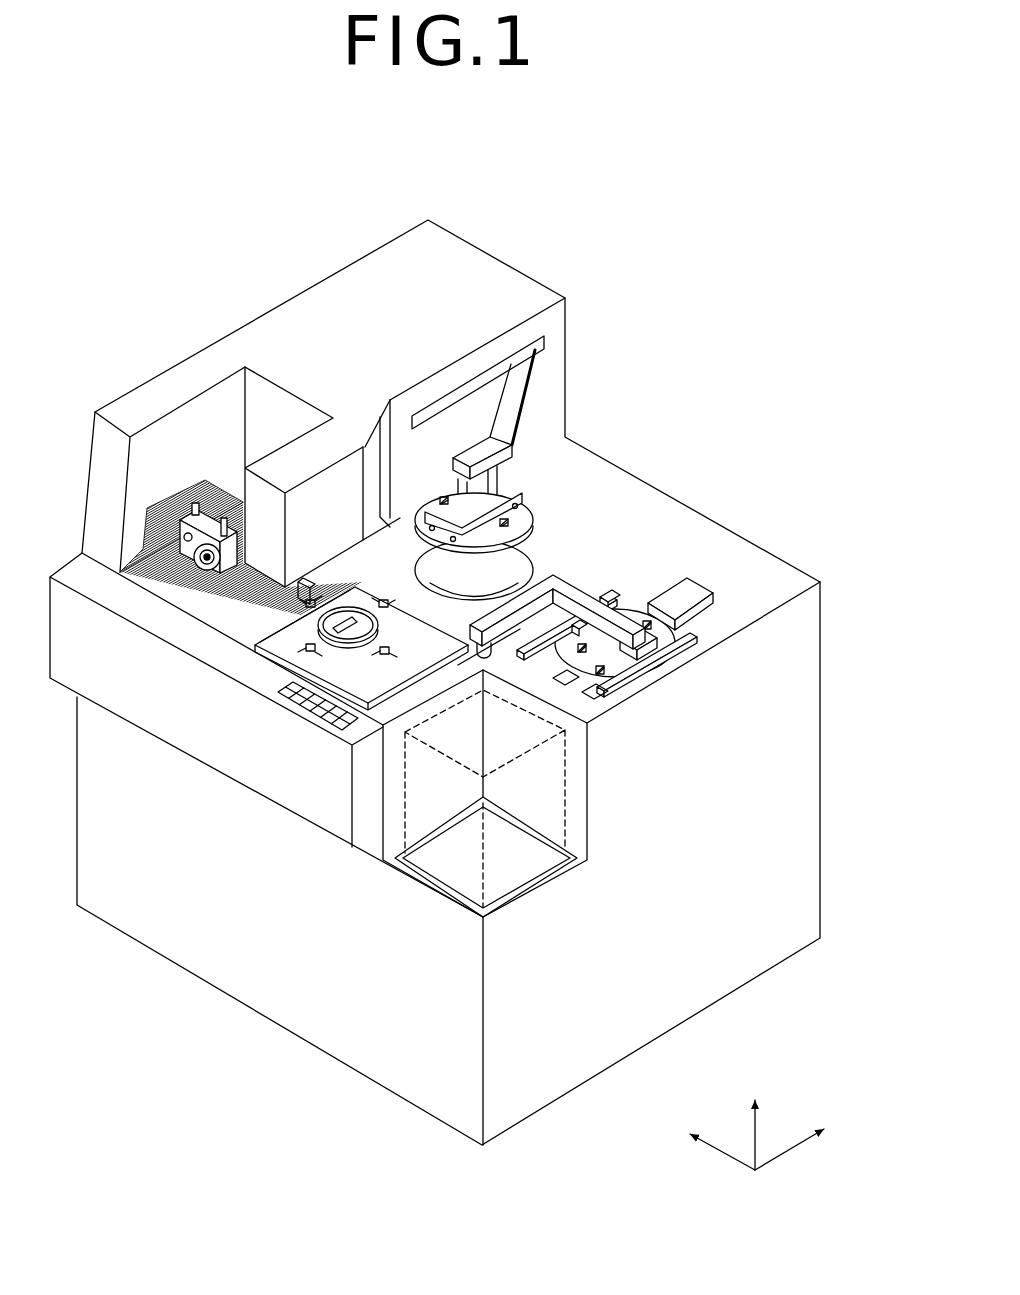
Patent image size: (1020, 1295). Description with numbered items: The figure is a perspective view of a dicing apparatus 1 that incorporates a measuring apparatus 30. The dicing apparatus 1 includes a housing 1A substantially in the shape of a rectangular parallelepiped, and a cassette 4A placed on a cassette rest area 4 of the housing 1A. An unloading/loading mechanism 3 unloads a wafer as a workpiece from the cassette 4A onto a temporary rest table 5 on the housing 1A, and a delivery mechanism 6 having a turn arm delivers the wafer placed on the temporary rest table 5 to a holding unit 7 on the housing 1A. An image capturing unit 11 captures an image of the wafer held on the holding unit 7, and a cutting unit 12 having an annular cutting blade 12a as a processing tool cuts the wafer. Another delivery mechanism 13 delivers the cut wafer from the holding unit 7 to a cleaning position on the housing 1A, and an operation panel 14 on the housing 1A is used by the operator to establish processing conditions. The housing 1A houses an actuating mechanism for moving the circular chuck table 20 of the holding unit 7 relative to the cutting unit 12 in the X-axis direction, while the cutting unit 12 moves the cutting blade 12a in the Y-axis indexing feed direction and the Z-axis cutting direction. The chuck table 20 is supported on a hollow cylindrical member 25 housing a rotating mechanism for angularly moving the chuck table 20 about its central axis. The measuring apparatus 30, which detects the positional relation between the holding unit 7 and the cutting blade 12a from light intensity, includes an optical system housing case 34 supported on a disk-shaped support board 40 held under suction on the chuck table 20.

The dicing apparatus 1 is at (704, 450).
The housing 1A is at (797, 730).
The unloading/loading mechanism 3 is at (690, 590).
The cassette rest area 4 is at (468, 876).
The cassette 4A is at (567, 827).
The temporary rest table 5 is at (613, 693).
The delivery mechanism 6 is at (558, 588).
The holding unit 7 is at (290, 630).
The image capturing unit 11 is at (318, 578).
The cutting unit 12 is at (195, 492).
The cutting blade 12a is at (215, 596).
The delivery mechanism 13 is at (514, 400).
The operation panel 14 is at (312, 718).
The chuck table 20 is at (356, 597).
The hollow cylindrical member 25 is at (338, 651).
The measuring apparatus 30 is at (320, 618).
The optical system housing case 34 is at (399, 679).
The support board 40 is at (381, 623).